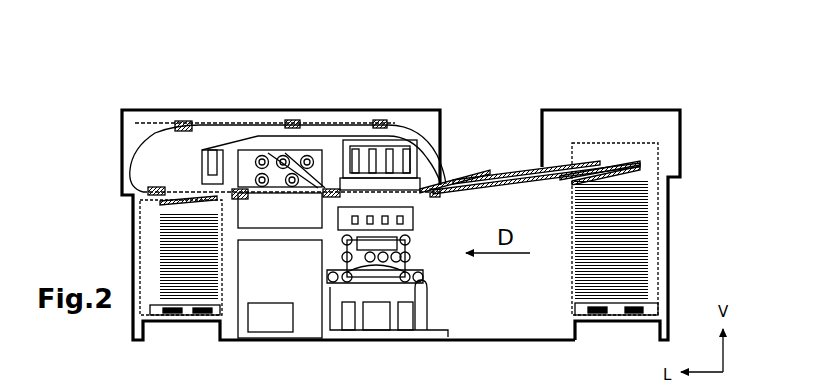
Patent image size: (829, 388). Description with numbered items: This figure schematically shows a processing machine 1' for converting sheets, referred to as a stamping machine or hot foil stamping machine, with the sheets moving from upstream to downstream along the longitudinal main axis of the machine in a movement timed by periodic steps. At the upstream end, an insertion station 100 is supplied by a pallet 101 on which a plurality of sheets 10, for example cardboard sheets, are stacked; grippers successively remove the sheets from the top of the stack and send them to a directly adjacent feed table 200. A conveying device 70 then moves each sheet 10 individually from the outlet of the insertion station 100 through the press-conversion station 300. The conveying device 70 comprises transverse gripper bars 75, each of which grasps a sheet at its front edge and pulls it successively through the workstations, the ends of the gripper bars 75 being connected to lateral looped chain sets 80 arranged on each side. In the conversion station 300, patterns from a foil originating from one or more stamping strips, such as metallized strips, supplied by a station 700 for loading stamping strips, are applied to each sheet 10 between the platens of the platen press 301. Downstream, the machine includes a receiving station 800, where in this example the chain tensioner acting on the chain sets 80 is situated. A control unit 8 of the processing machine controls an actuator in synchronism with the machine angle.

The processing machine 1' is at (422, 182).
The insertion station 100 is at (606, 101).
The feed table 200 is at (475, 144).
The conversion station 300 is at (382, 101).
The platen press 301 is at (415, 263).
The station for loading stamping strips 700 is at (278, 101).
The receiving station 800 is at (184, 101).
The chain set 80 is at (153, 133).
The conveying device 70 is at (120, 158).
The gripper bar 75 is at (231, 212).
The control unit 8 is at (296, 316).
The sheet element 10 is at (671, 233).
The pallet 101 is at (672, 316).